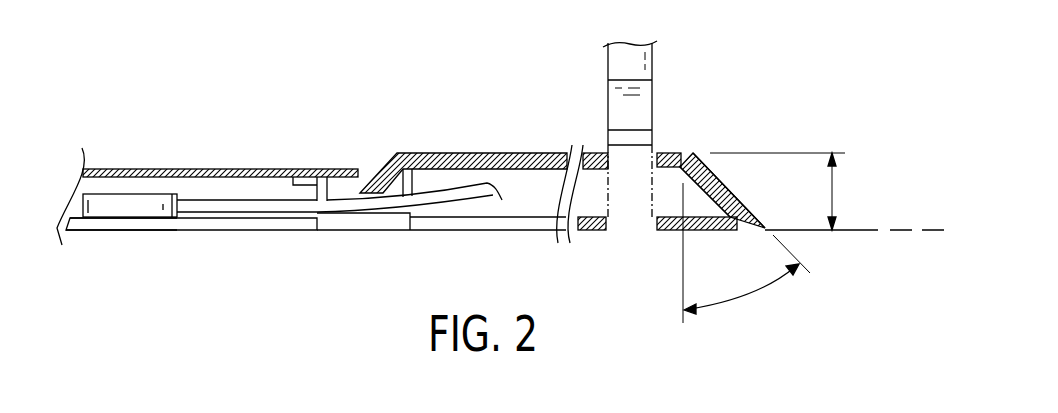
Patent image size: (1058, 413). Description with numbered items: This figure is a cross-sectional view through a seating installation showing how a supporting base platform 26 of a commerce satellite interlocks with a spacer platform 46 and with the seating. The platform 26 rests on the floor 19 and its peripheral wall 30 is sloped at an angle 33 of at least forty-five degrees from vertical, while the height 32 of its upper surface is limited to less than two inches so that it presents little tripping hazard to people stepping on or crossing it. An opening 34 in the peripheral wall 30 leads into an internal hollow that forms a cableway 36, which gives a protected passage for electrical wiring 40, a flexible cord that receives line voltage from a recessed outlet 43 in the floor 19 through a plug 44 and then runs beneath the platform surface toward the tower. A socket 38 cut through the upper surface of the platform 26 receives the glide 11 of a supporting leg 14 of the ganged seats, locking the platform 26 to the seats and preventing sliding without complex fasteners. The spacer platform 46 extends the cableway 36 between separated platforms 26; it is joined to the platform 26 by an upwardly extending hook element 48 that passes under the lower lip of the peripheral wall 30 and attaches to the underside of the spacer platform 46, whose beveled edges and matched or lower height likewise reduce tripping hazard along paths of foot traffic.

The glide 11 is at (618, 137).
The supporting leg 14 is at (620, 66).
The floor 19 is at (858, 228).
The base platform 26 is at (673, 152).
The peripheral wall 30 is at (712, 170).
The height 32 is at (836, 193).
The angle 33 is at (750, 298).
The opening 34 is at (740, 193).
The cableway 36 is at (222, 190).
The socket 38 is at (610, 227).
The electrical wiring 40 is at (440, 198).
The recessed outlet 43 is at (170, 222).
The plug 44 is at (113, 210).
The spacer platform 46 is at (248, 166).
The hook element 48 is at (322, 185).